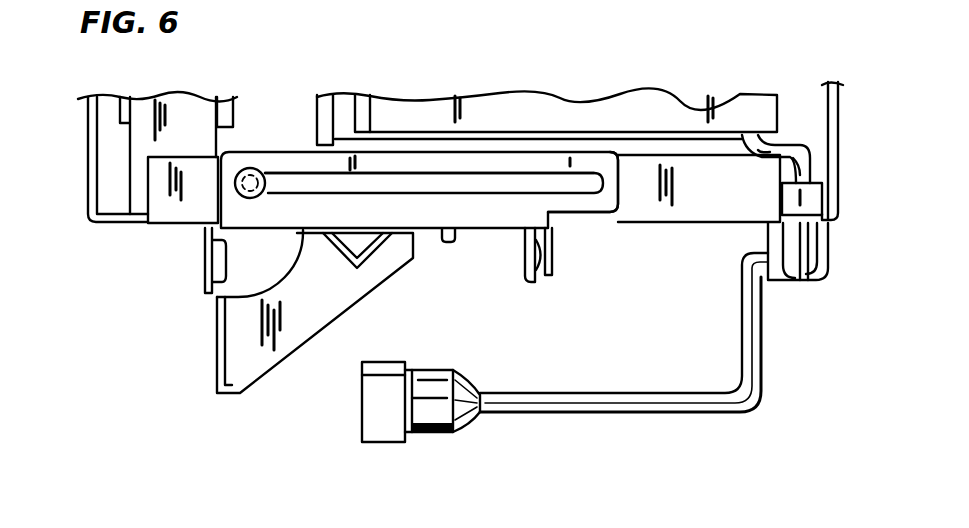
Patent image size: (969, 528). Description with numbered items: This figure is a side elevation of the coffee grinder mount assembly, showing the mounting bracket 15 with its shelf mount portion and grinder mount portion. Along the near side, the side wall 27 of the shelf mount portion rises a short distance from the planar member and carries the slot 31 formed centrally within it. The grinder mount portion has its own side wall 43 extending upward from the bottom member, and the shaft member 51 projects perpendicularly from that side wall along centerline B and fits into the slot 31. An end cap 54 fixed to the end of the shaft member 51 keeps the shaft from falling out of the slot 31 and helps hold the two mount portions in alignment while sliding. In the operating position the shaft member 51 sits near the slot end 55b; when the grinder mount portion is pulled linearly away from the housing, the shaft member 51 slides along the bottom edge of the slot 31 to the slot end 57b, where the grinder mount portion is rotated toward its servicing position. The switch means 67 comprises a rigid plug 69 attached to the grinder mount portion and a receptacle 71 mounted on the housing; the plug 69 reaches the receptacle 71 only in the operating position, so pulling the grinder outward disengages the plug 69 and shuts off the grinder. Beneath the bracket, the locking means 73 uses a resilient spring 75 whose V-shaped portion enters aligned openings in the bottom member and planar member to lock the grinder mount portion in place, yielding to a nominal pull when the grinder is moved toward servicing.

The mounting bracket 15 is at (432, 230).
The side wall 27 is at (476, 207).
The slot 31 is at (313, 182).
The side wall 43 is at (198, 183).
The shaft member 51 is at (265, 190).
The end cap 54 is at (280, 173).
The slot end 55b is at (240, 197).
The slot end 57b is at (588, 193).
The switch means 67 is at (608, 414).
The rigid plug 69 is at (436, 420).
The receptacle 71 is at (384, 424).
The locking means 73 is at (313, 310).
The resilient spring 75 is at (362, 266).